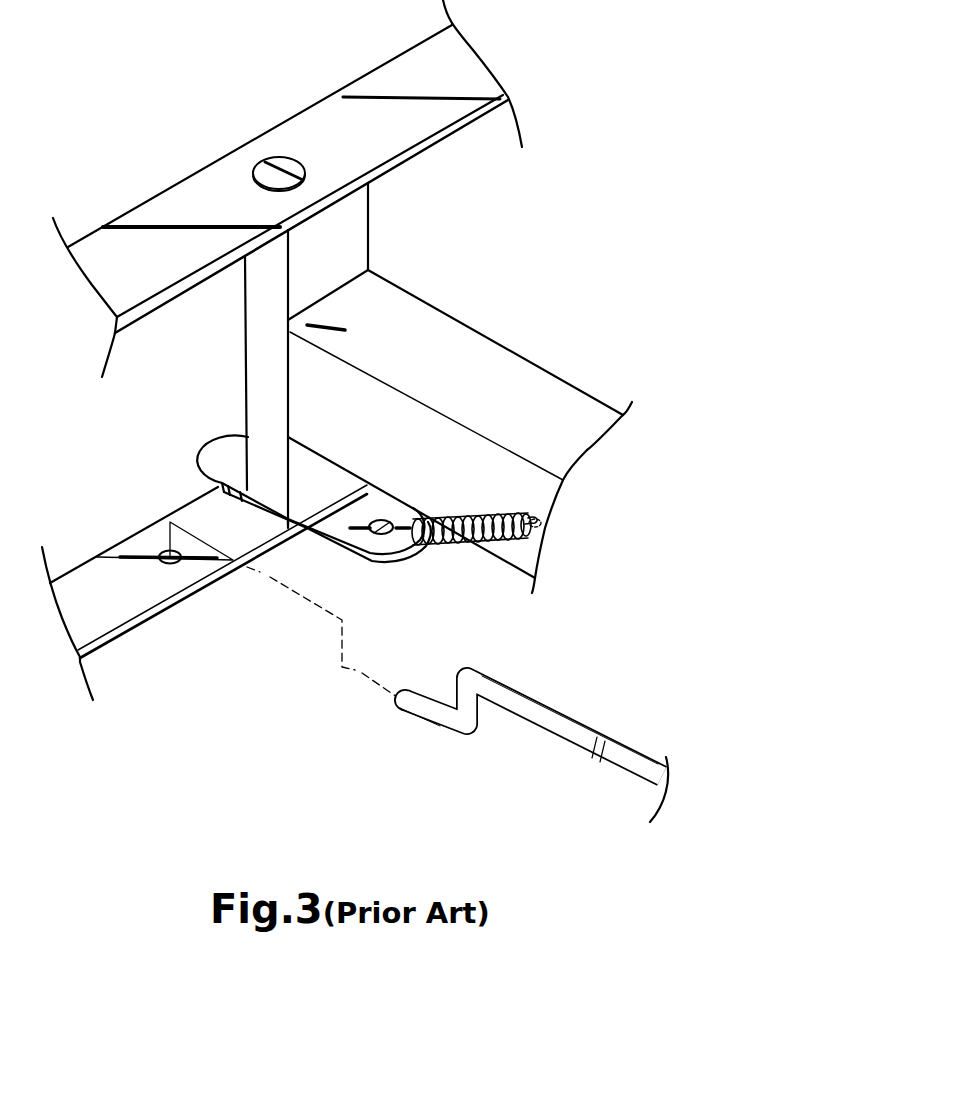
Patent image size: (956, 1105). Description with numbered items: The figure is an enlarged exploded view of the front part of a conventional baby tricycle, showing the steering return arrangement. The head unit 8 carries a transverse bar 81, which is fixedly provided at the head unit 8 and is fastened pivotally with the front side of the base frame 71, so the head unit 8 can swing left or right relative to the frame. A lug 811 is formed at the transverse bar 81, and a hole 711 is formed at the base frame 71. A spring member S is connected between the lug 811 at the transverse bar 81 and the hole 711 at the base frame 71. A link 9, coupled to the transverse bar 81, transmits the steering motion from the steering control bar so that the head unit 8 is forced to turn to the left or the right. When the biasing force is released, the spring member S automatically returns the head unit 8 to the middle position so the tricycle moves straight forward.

The head unit 8 is at (195, 138).
The transverse bar 81 is at (128, 603).
The lug 811 is at (342, 516).
The base frame 71 is at (478, 362).
The hole 711 is at (542, 526).
The spring member S is at (431, 548).
The link 9 is at (553, 722).